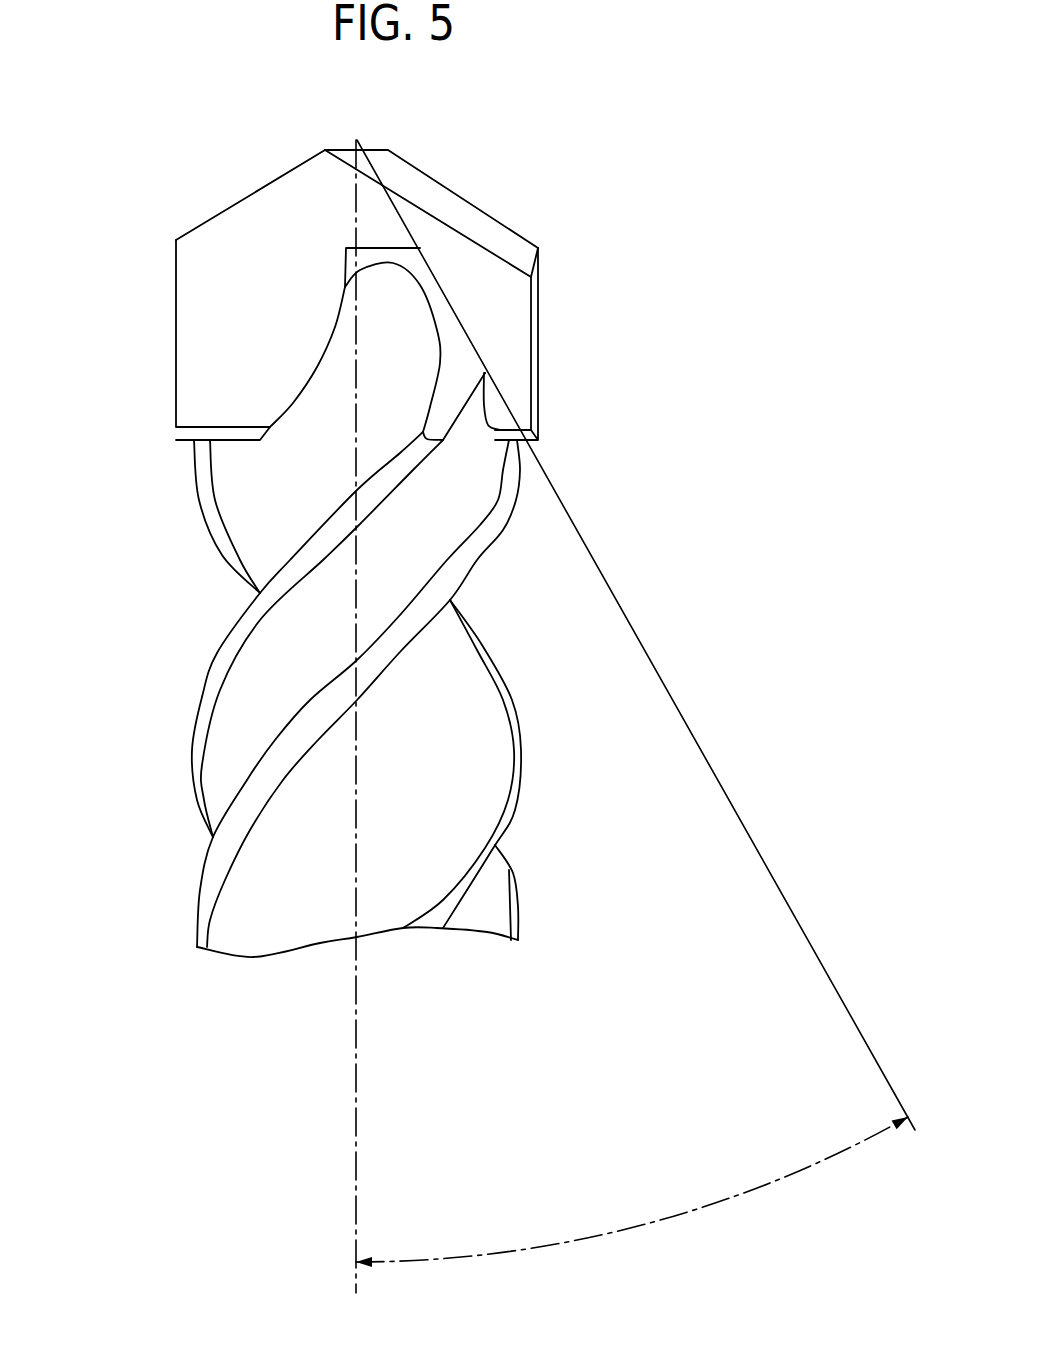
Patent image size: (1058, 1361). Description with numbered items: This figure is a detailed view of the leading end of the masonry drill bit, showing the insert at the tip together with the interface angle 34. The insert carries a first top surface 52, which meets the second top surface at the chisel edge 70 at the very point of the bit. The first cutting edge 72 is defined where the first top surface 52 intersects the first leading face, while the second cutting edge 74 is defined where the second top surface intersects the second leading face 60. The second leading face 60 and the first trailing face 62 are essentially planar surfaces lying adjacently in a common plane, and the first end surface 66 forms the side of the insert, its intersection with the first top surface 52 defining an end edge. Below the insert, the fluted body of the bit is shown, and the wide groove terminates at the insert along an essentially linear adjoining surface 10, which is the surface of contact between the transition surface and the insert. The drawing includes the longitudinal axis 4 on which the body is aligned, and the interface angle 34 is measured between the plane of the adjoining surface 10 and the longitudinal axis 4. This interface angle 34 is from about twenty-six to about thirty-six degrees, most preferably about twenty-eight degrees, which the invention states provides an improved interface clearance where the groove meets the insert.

The longitudinal axis 4 is at (354, 1088).
The adjoining surface 10 is at (472, 354).
The interface angle 34 is at (690, 1231).
The first top surface 52 is at (502, 237).
The second leading face 60 is at (212, 311).
The first trailing face 62 is at (515, 311).
The first end surface 66 is at (540, 292).
The chisel edge 70 is at (343, 147).
The first cutting edge 72 is at (456, 188).
The second cutting edge 74 is at (202, 222).